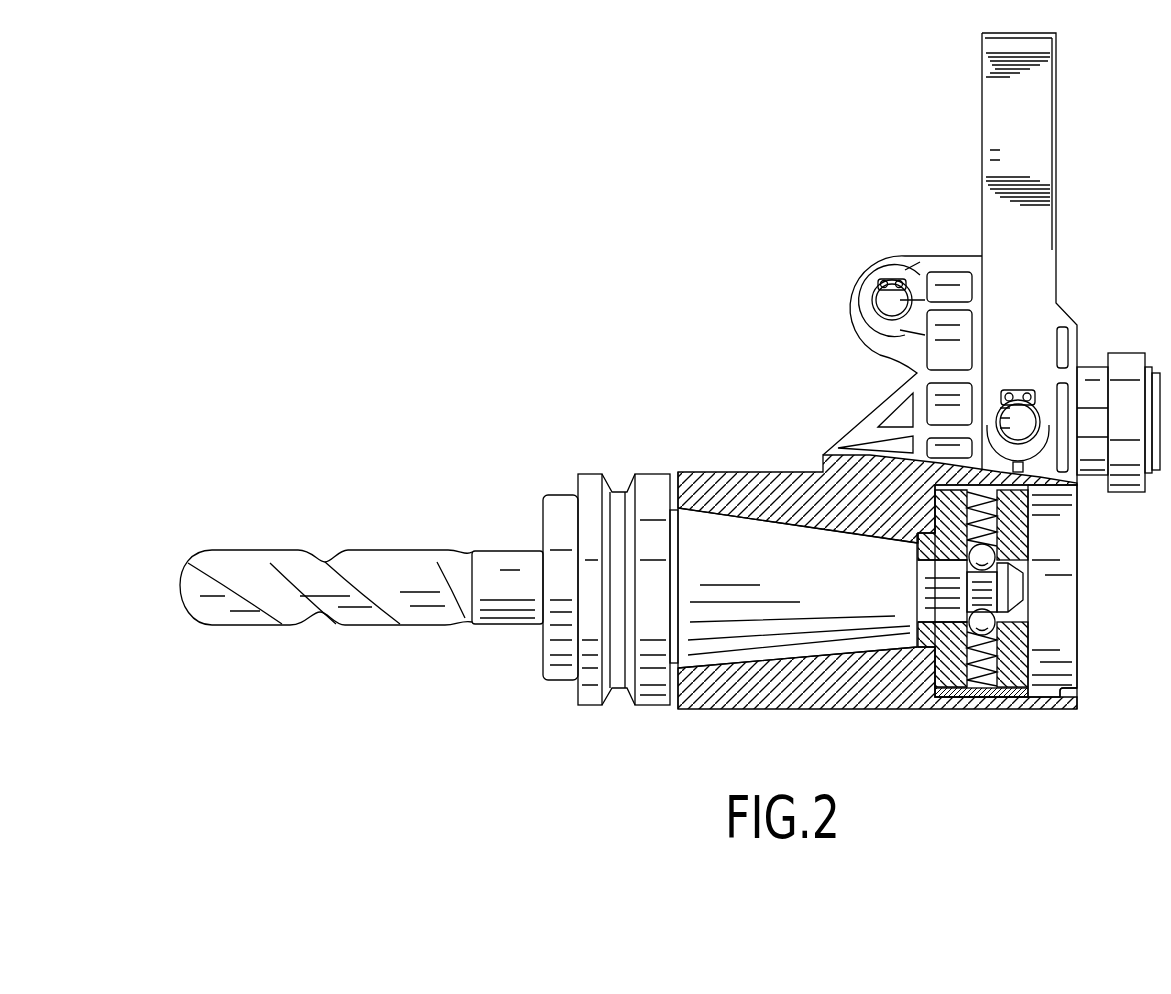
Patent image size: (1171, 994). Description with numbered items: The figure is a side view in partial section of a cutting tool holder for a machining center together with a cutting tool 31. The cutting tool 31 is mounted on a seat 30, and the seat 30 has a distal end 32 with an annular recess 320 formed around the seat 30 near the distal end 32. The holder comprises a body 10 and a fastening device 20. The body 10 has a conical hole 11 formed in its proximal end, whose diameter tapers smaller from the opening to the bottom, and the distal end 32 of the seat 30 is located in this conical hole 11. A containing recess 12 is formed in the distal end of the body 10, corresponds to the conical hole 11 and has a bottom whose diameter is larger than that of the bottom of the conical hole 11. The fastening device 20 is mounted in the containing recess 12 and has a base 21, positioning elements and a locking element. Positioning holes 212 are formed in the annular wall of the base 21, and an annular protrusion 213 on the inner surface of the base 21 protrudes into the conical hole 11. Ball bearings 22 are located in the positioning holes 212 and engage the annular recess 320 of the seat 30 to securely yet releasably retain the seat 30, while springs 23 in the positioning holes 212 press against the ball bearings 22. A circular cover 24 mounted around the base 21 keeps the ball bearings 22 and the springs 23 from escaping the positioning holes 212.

The body 10 is at (858, 718).
The conical hole 11 is at (766, 660).
The containing recess 12 is at (1062, 688).
The fastening device 20 is at (1052, 548).
The base 21 is at (1040, 646).
The ball bearings 22 is at (992, 614).
The springs 23 is at (988, 677).
The circular cover 24 is at (956, 692).
The positioning holes 212 is at (975, 682).
The annular protrusion 213 is at (925, 545).
The seat 30 is at (626, 712).
The cutting tool 31 is at (518, 616).
The distal end 32 is at (1017, 588).
The annular recess 320 is at (953, 567).